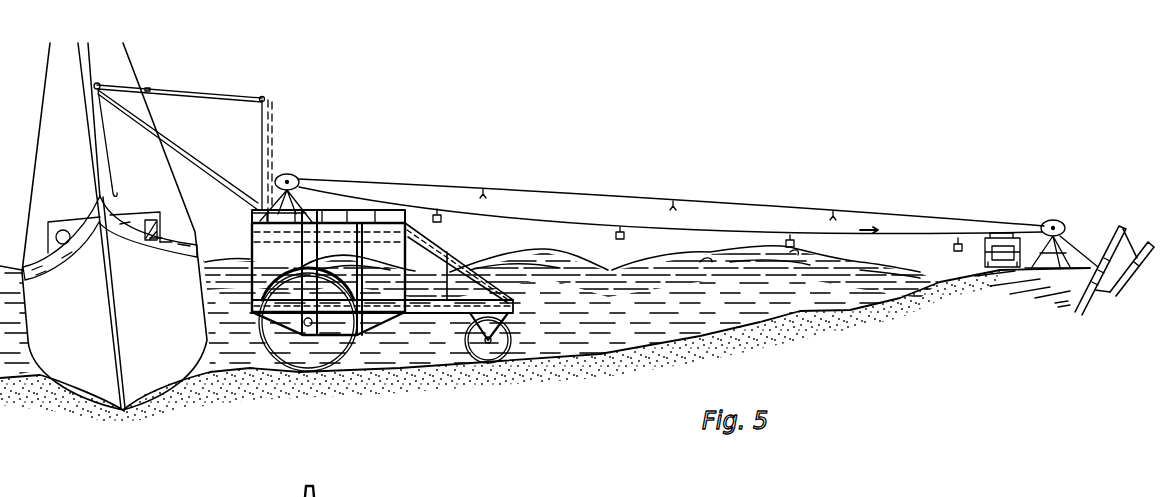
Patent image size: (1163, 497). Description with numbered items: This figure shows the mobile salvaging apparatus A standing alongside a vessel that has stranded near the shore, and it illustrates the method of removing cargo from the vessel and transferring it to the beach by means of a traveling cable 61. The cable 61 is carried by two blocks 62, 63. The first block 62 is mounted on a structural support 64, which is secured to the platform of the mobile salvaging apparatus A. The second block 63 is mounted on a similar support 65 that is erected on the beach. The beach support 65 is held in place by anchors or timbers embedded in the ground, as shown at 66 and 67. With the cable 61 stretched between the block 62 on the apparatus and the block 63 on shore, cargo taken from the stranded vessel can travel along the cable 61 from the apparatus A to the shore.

The mobile salvaging apparatus A is at (427, 315).
The cable 61 is at (480, 212).
The block 62 is at (290, 175).
The block 63 is at (1053, 220).
The structural support 64 is at (262, 223).
The support 65 is at (1058, 260).
The anchor or timber 66 is at (1122, 227).
The anchor or timber 67 is at (1128, 281).